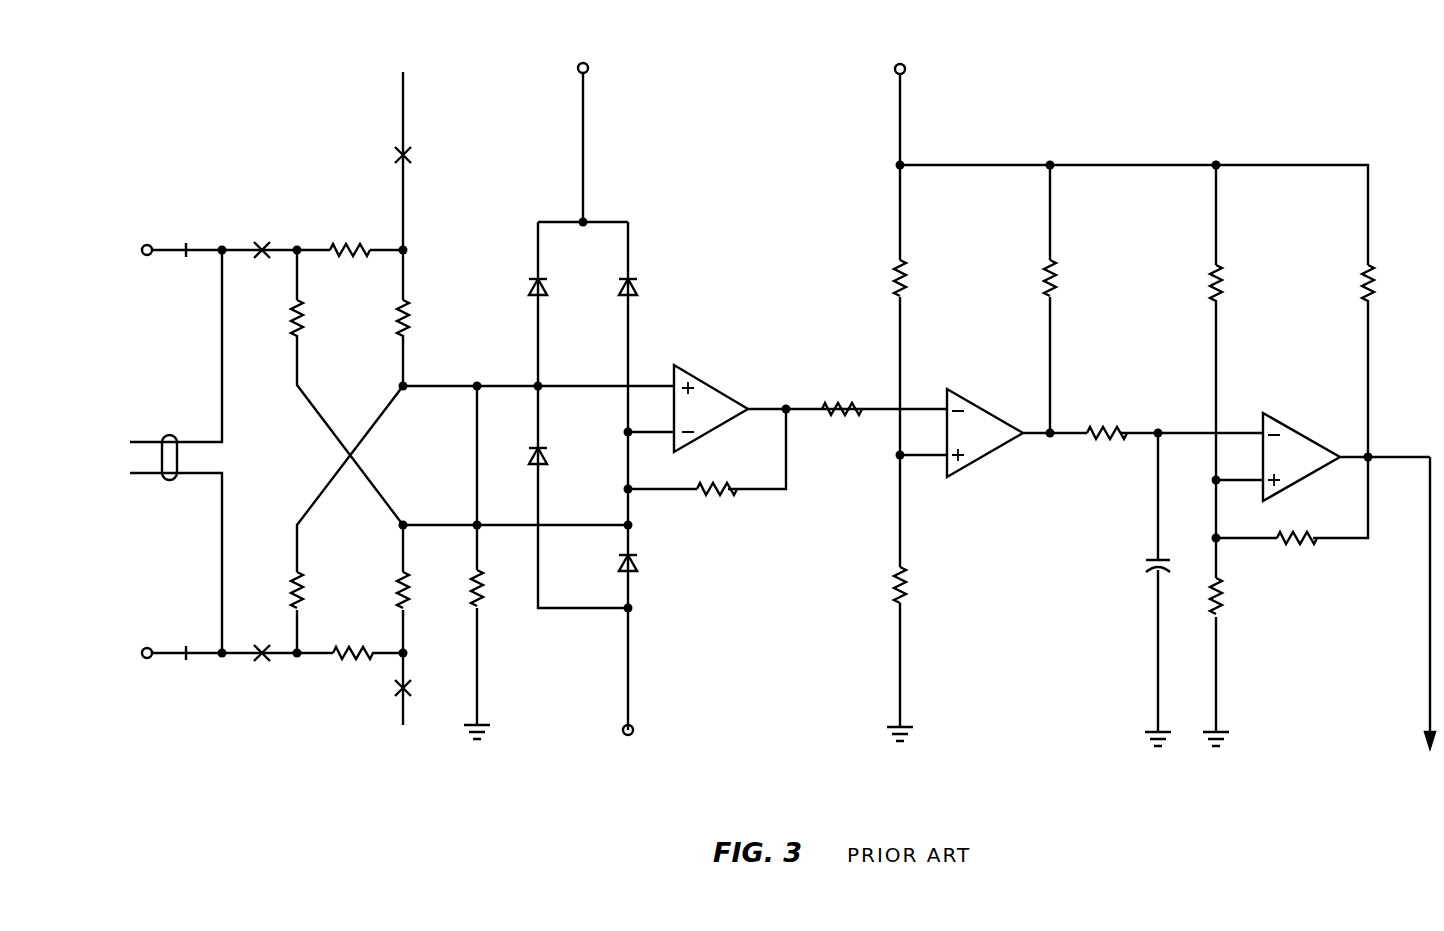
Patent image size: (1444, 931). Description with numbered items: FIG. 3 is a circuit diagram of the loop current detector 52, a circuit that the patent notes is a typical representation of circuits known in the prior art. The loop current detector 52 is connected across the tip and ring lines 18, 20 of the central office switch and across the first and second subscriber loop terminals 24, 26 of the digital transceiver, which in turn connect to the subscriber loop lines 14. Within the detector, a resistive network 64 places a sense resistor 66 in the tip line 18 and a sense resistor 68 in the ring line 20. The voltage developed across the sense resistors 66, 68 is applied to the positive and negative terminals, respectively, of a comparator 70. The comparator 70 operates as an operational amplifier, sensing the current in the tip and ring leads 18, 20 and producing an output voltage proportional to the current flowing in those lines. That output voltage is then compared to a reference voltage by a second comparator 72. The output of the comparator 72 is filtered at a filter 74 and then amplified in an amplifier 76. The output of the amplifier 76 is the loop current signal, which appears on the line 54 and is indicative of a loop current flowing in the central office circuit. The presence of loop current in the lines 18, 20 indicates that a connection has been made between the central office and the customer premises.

The subscriber loop lines 14 is at (165, 484).
The tip line 18 is at (403, 95).
The ring line 20 is at (403, 712).
The first subscriber loop terminal 24 is at (208, 248).
The second subscriber loop terminal 26 is at (143, 660).
The loop current detector 52 is at (780, 581).
The line 54 is at (1430, 608).
The resistive network 64 is at (362, 369).
The sense resistor 66 is at (354, 244).
The sense resistor 68 is at (366, 651).
The comparator 70 is at (727, 362).
The comparator 72 is at (975, 397).
The filter 74 is at (1119, 392).
The amplifier 76 is at (1305, 432).